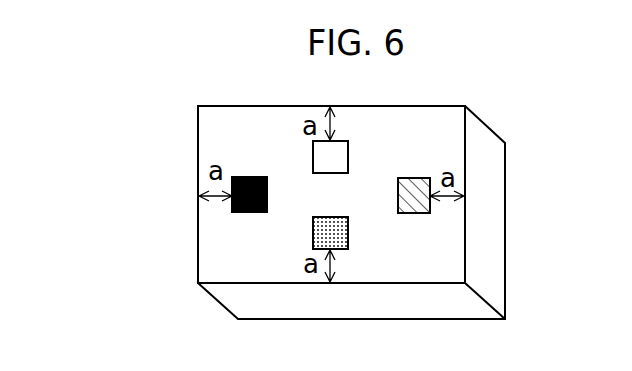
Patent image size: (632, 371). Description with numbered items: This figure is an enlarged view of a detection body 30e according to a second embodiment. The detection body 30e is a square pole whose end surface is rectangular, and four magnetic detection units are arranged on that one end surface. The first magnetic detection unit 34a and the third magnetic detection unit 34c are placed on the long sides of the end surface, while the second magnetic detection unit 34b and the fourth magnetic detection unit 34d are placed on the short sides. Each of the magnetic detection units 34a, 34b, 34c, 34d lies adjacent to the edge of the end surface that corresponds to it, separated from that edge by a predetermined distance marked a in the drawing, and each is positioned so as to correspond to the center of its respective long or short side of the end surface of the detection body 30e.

The detection body 30e is at (504, 114).
The first magnetic detection unit 34a is at (348, 242).
The second magnetic detection unit 34b is at (250, 213).
The third magnetic detection unit 34c is at (349, 147).
The fourth magnetic detection unit 34d is at (417, 213).